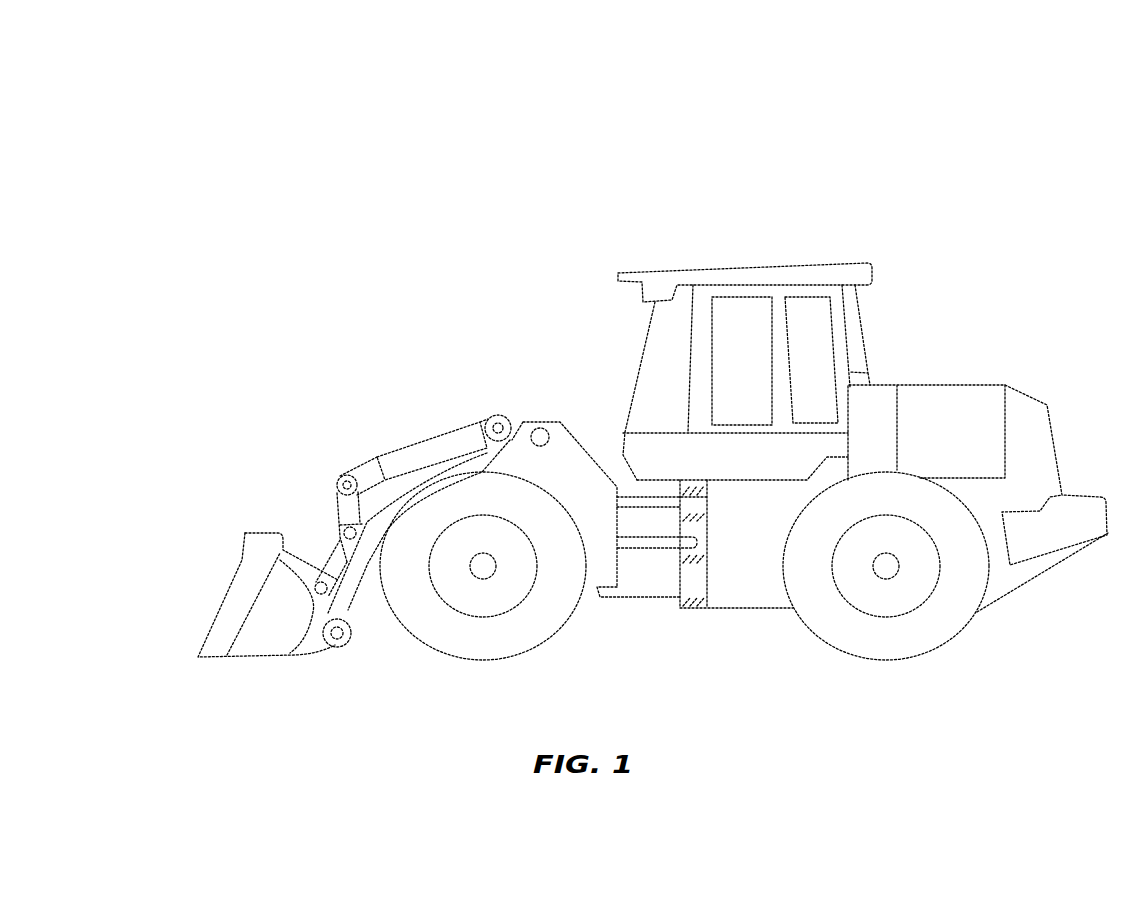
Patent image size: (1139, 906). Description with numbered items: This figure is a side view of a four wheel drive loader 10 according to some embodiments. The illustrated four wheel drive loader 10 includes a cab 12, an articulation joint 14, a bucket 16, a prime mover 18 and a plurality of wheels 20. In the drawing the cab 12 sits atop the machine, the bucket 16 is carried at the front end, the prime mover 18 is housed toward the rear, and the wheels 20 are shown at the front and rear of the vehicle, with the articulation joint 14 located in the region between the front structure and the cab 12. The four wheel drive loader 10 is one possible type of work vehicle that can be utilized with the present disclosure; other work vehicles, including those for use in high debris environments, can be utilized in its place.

The four wheel drive loader 10 is at (890, 182).
The cab 12 is at (748, 263).
The articulation joint 14 is at (543, 427).
The bucket 16 is at (258, 523).
The prime mover 18 is at (902, 363).
The wheels 20 is at (512, 635).